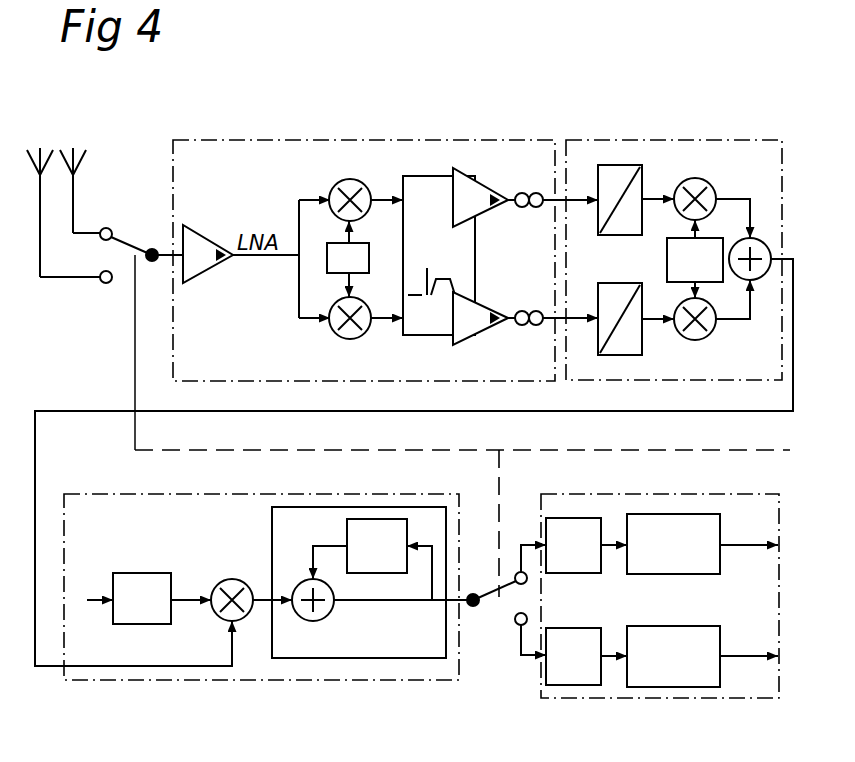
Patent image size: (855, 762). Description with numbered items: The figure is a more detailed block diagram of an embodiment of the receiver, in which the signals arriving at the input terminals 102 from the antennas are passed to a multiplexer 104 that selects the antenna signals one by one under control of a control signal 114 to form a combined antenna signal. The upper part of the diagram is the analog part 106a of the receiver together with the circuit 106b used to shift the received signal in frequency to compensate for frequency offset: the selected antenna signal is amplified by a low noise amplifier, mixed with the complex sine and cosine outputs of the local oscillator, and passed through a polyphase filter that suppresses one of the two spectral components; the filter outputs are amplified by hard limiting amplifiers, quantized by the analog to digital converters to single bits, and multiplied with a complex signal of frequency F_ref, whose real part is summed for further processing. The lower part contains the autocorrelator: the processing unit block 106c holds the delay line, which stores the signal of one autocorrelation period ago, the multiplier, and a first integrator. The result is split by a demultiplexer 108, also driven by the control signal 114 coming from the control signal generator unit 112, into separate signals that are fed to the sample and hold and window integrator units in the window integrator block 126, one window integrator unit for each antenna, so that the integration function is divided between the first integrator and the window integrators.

The input terminals 102 is at (45, 140).
The multiplexer 104 is at (128, 226).
The analog part 106a is at (356, 140).
The frequency shifting circuit 106b is at (678, 140).
The processing unit block 106c is at (190, 681).
The demultiplexer 108 is at (500, 622).
The control signal generator unit 112 is at (745, 438).
The control signal 114 is at (582, 450).
The window integrator block 126 is at (680, 698).